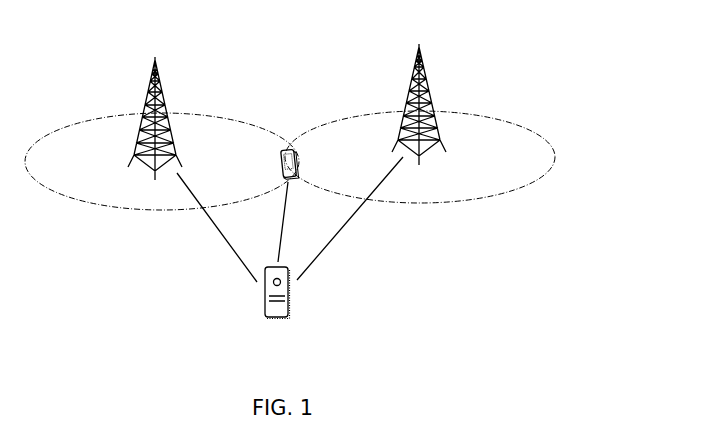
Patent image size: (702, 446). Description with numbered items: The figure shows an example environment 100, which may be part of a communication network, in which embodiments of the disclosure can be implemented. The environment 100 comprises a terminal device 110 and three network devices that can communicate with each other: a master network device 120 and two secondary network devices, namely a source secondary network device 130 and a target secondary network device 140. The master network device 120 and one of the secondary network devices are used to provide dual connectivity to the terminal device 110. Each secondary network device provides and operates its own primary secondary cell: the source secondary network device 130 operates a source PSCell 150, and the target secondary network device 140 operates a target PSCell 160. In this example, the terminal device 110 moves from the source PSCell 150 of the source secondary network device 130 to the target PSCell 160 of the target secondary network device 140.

The environment 100 is at (201, 39).
The terminal device 110 is at (297, 152).
The master network device 120 is at (290, 300).
The source secondary network device 130 is at (426, 81).
The target secondary network device 140 is at (160, 96).
The source PSCell 150 is at (532, 150).
The target PSCell 160 is at (222, 128).